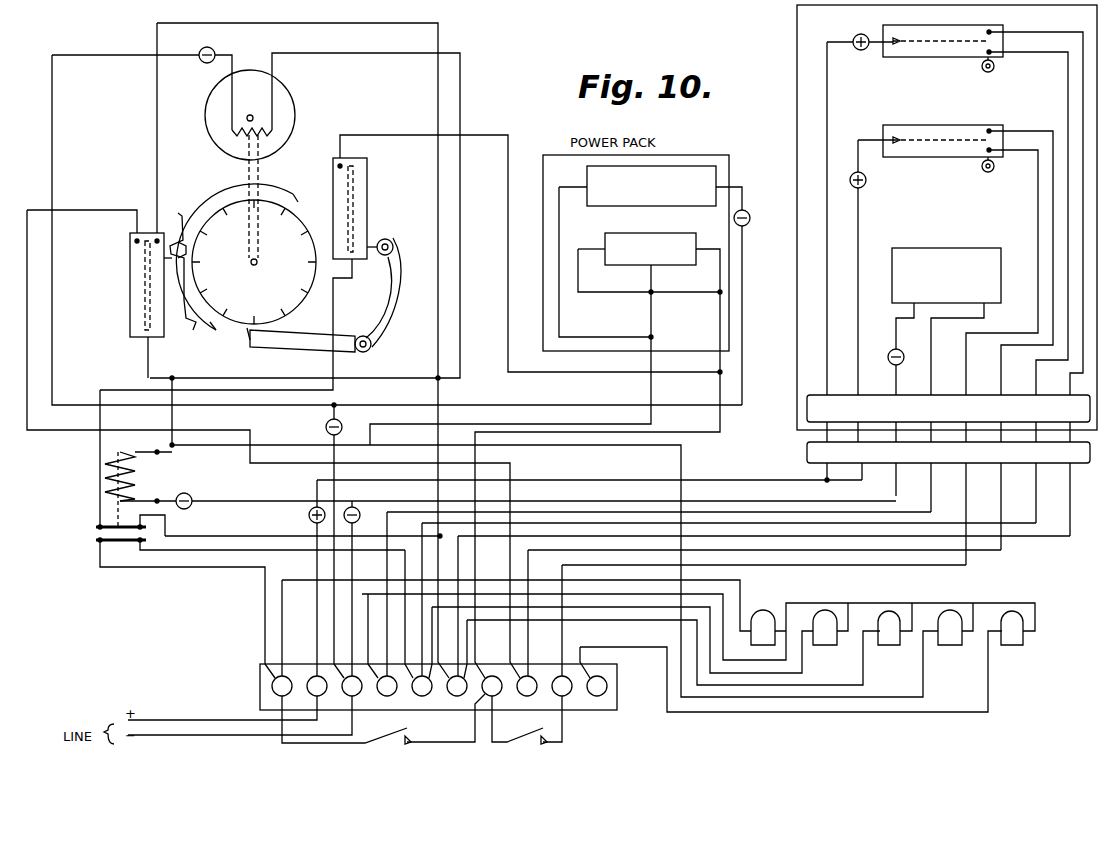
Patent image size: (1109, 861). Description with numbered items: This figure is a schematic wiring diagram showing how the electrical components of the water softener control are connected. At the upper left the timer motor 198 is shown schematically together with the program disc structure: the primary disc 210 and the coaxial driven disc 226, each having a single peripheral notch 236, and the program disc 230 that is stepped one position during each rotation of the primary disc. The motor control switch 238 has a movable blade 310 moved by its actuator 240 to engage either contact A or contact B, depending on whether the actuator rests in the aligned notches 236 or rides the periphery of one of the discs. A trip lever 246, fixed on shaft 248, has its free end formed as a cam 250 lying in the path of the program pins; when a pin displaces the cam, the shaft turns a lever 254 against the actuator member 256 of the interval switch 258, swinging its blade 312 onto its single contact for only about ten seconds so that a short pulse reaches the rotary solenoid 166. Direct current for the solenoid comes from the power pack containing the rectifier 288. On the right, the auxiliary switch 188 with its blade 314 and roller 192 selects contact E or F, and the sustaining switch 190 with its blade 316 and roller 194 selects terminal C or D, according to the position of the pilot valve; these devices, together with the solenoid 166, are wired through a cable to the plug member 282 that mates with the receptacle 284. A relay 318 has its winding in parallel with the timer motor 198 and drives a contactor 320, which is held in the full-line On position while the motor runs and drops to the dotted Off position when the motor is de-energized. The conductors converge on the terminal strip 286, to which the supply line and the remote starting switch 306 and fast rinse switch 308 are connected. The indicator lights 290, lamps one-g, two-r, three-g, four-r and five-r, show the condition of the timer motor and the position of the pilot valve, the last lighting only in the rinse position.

The rotary solenoid device 166 is at (992, 248).
The auxiliary switch 188 is at (940, 144).
The sustaining switch 190 is at (946, 44).
The roller 192 is at (989, 173).
The roller 194 is at (995, 68).
The electric motor 198 is at (206, 122).
The primary disc 210 is at (237, 236).
The second disc 226 is at (236, 190).
The program disc 230 is at (290, 224).
The peripheral notch 236 is at (178, 235).
The motor control switch 238 is at (112, 285).
The actuator 240 is at (188, 318).
The trip lever 246 is at (302, 350).
The shaft 248 is at (365, 352).
The cam 250 is at (250, 336).
The lever 254 is at (385, 332).
The actuator member 256 is at (383, 240).
The interval switch 258 is at (367, 204).
The plug member 282 is at (807, 410).
The electrical receptacle 284 is at (807, 452).
The terminal strip 286 is at (265, 692).
The rectifier 288 is at (628, 233).
The indicator lights 290 is at (948, 612).
The starting switch 306 is at (408, 732).
The fast rinse switch 308 is at (547, 740).
The movable blade 310 is at (145, 308).
The swingable blade 312 is at (367, 204).
The swingable blade 314 is at (886, 138).
The movable blade 316 is at (885, 48).
The relay 318 is at (95, 466).
The contactor 320 is at (98, 526).